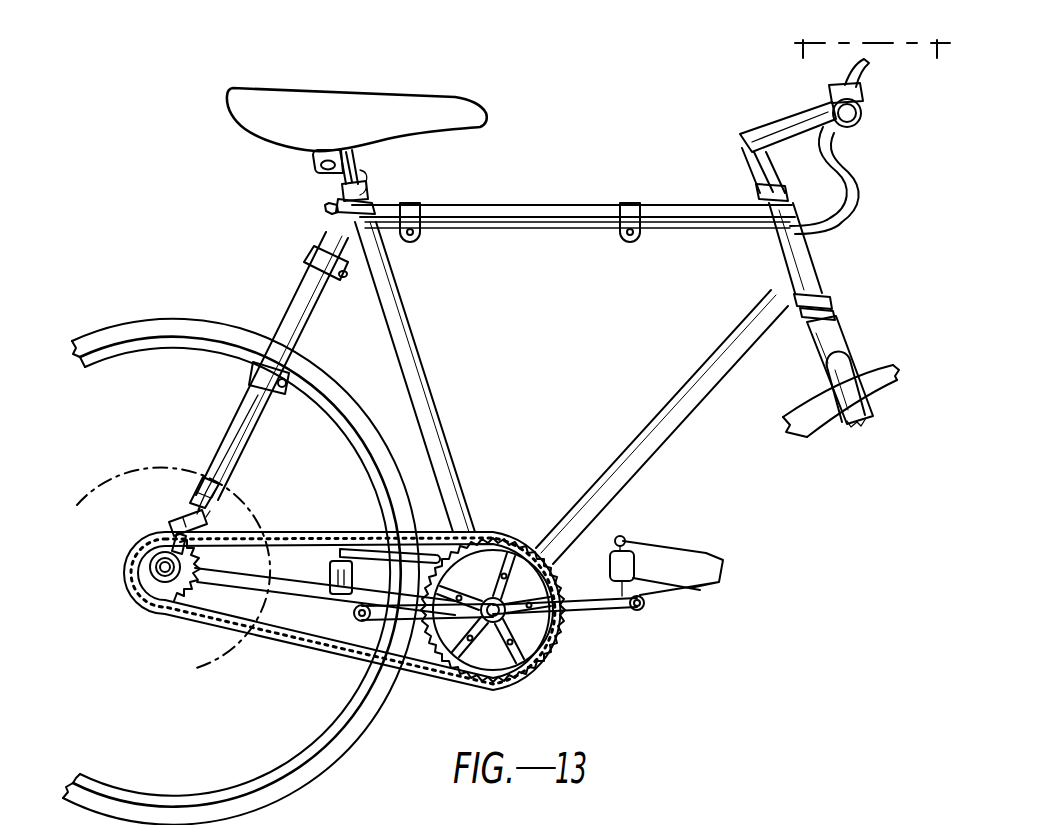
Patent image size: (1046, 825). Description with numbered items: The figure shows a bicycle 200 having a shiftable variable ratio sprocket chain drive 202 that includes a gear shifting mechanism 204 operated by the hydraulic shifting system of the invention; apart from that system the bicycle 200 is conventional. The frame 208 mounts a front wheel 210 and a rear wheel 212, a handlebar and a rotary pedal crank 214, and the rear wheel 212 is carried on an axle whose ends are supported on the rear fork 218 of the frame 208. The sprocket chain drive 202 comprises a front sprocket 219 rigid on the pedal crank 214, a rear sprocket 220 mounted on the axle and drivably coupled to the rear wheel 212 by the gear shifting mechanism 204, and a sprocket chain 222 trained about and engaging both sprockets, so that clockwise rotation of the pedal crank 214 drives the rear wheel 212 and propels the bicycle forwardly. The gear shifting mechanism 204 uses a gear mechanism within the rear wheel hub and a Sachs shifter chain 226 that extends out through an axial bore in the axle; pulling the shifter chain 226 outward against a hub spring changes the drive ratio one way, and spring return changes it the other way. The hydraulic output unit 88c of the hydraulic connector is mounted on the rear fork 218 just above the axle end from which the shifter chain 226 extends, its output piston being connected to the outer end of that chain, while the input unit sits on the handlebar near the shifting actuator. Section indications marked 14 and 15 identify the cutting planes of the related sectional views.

The bicycle 200 is at (273, 226).
The sprocket chain drive 202 is at (498, 513).
The gear shifting mechanism 204 is at (169, 526).
The frame 208 is at (405, 318).
The front wheel 210 is at (862, 358).
The rear wheel 212 is at (191, 320).
The pedal crank 214 is at (598, 603).
The rear fork 218 is at (260, 422).
The front sprocket 219 is at (537, 653).
The rear sprocket 220 is at (152, 568).
The sprocket chain 222 is at (314, 650).
The shifter chain 226 is at (160, 596).
The hydraulic output unit 88c is at (190, 504).
The section line 14- 14 is at (75, 508).
The section line 15- 15 is at (803, 67).